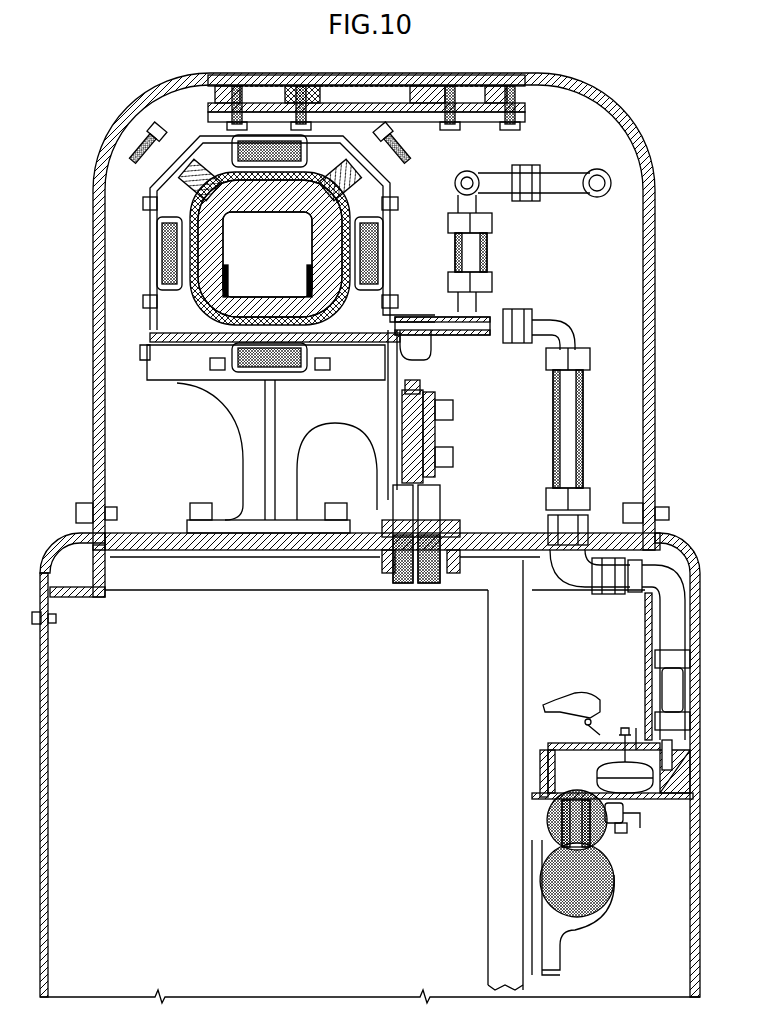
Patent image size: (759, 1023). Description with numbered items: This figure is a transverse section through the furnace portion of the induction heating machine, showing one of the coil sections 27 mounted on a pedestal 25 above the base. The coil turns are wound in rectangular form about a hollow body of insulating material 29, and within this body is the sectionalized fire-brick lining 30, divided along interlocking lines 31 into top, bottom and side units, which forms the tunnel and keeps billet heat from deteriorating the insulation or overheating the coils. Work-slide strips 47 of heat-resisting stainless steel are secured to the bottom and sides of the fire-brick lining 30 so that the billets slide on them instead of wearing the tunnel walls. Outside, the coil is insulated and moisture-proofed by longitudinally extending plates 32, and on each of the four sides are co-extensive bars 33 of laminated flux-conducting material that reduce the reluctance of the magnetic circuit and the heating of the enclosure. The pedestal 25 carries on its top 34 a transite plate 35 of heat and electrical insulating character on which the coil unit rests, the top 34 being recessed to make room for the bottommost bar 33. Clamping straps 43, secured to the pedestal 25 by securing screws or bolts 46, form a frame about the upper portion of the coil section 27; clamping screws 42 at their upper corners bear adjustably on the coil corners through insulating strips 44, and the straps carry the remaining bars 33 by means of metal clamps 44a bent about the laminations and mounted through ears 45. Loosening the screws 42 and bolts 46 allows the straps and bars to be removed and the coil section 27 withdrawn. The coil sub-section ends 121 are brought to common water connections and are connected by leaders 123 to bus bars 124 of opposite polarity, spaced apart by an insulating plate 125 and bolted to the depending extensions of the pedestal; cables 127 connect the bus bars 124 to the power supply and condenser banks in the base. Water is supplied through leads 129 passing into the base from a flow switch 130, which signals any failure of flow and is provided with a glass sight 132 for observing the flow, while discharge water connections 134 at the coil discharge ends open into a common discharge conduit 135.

The pedestal 25 is at (248, 437).
The coil section 27 is at (392, 190).
The hollow body of insulating material 29 is at (283, 205).
The fire-brick lining 30 is at (223, 247).
The interlocking division lines 31 is at (225, 224).
The insulating plates 32 is at (192, 322).
The laminated flux-conducting bars 33 is at (158, 262).
The pedestal top 34 is at (355, 355).
The transite plate 35 is at (185, 345).
The clamping screws 42 is at (378, 152).
The clamping straps 43 is at (385, 251).
The insulating strips 44 is at (378, 172).
The metal clamps 44a is at (152, 227).
The ears 45 is at (150, 186).
The securing screws or bolts 46 is at (142, 358).
The work-slide strips 47 is at (310, 272).
The coil sub-section ends 121 is at (400, 315).
The leaders 123 is at (428, 358).
The bus bars 124 is at (440, 443).
The insulating plate 125 is at (425, 384).
The cables 127 is at (437, 500).
The water leads 129 is at (583, 471).
The flow switch 130 is at (634, 722).
The glass sight 132 is at (690, 688).
The discharge water connections 134 is at (490, 253).
The common discharge conduit 135 is at (592, 197).